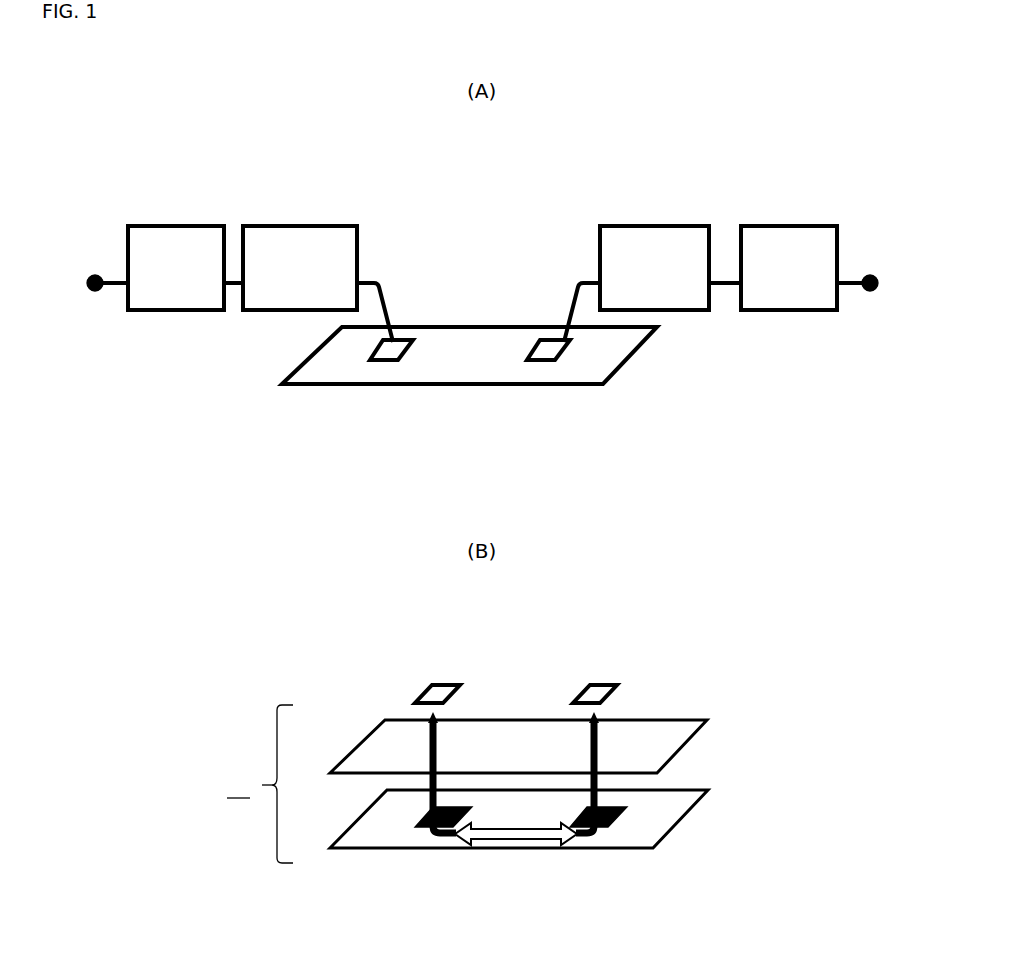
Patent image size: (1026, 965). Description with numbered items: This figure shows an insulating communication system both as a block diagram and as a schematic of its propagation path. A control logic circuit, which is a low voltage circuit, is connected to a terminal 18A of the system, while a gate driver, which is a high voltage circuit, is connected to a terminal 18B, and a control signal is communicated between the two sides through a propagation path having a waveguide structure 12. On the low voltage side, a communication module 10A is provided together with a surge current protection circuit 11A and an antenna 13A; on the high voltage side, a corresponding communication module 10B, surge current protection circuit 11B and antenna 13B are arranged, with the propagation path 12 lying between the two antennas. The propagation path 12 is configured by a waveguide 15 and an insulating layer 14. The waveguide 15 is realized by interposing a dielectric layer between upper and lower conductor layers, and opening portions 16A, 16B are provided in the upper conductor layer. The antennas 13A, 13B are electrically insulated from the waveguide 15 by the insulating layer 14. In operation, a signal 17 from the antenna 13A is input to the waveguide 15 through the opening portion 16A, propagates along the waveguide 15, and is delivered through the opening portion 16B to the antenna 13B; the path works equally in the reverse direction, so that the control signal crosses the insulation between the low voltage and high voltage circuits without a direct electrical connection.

The communication module 10A is at (195, 222).
The communication module 10B is at (802, 222).
The surge current protection circuit 11A is at (315, 222).
The surge current protection circuit 11B is at (658, 223).
The propagation path having a waveguide structure 12 is at (460, 332).
The antenna 13A is at (387, 363).
The antenna 13B is at (540, 340).
The insulating layer 14 is at (683, 725).
The waveguide 15 is at (690, 793).
The opening portion 16A is at (423, 828).
The opening portion 16B is at (613, 828).
The signal 17 is at (510, 848).
The terminal 18A is at (98, 292).
The terminal 18B is at (866, 277).